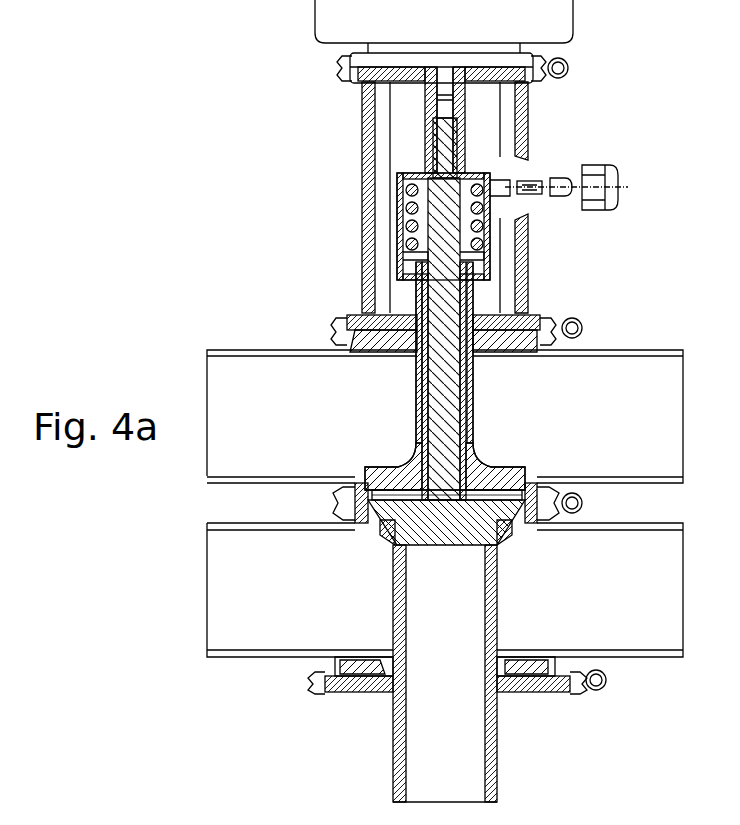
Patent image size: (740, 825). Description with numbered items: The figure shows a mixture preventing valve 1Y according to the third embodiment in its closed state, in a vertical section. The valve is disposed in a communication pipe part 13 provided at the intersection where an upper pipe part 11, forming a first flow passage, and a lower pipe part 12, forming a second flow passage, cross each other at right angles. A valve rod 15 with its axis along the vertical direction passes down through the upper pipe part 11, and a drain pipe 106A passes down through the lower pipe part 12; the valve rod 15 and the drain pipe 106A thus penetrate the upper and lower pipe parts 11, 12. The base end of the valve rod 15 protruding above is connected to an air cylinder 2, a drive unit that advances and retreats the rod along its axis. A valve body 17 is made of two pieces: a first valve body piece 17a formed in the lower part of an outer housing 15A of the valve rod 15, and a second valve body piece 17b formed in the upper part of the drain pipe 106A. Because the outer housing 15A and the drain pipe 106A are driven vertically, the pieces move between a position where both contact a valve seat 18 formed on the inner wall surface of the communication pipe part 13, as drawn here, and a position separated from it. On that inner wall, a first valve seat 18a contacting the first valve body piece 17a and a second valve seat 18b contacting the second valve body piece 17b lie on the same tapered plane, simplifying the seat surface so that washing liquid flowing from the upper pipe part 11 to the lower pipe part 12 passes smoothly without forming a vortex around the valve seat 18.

The air cylinder 2 is at (528, 110).
The mixture preventing valve 1Y is at (623, 295).
The upper pipe part 11 is at (660, 350).
The lower pipe part 12 is at (662, 658).
The communication pipe part 13 is at (330, 503).
The valve rod 15 is at (455, 408).
The outer housing 15A is at (473, 376).
The valve body 17 is at (412, 440).
The first valve body piece 17a is at (504, 470).
The second valve body piece 17b is at (505, 532).
The valve seat 18 is at (372, 515).
The first valve seat 18a is at (374, 490).
The second valve seat 18b is at (395, 549).
The drain pipe 106A is at (497, 742).